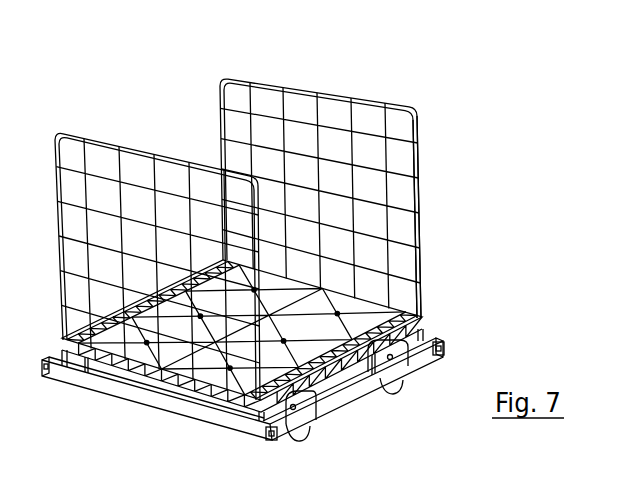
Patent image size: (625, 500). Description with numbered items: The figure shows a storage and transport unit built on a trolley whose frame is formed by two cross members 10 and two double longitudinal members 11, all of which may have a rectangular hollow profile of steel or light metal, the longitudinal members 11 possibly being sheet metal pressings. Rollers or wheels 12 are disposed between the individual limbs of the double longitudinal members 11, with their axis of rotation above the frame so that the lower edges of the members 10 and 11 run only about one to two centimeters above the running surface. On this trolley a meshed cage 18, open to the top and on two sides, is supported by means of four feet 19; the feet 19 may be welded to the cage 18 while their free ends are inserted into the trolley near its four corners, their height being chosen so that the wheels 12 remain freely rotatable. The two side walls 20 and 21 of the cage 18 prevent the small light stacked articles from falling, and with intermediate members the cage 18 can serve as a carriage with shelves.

The cross member 10 is at (145, 398).
The double longitudinal member 11 is at (347, 395).
The wheel 12 is at (295, 397).
The meshed cage 18 is at (430, 240).
The foot 19 is at (67, 353).
The side wall 20 is at (345, 122).
The side wall 21 is at (150, 170).